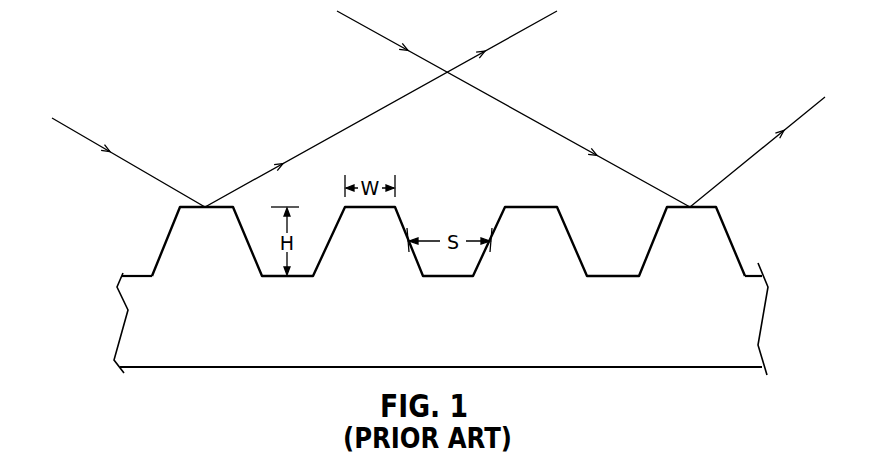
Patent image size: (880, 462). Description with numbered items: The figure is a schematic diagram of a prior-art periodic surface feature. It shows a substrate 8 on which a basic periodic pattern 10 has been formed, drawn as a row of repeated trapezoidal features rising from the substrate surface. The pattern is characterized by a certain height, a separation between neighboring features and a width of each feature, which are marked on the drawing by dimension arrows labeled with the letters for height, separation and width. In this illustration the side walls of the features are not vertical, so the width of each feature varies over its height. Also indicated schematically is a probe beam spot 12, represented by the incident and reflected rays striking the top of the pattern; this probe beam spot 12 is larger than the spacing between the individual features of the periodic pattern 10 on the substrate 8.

The substrate 8 is at (582, 367).
The basic periodic pattern 10 is at (152, 238).
The probe beam spot 12 is at (140, 165).